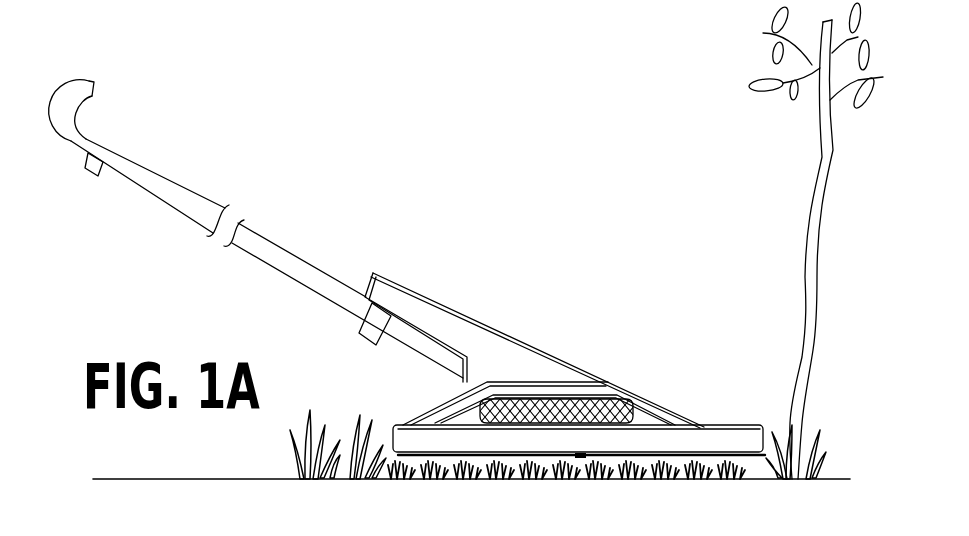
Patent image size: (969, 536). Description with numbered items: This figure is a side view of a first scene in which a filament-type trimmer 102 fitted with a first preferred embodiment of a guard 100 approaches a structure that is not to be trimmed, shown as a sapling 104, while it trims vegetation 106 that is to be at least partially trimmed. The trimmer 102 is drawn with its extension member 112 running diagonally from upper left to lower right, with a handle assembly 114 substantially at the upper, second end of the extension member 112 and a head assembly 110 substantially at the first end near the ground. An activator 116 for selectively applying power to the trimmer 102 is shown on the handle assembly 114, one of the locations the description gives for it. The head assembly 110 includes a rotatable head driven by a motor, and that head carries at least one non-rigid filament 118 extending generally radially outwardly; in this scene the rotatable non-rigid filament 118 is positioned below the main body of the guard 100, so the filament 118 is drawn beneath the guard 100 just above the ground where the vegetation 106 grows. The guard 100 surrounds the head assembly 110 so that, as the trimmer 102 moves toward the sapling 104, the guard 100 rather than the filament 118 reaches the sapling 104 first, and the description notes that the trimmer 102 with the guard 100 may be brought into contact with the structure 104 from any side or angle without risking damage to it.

The guard 100 is at (676, 388).
The filament-type trimmer 102 is at (297, 213).
The sapling 104 is at (850, 150).
The vegetation 106 is at (328, 418).
The head assembly 110 is at (628, 418).
The extension member 112 is at (268, 264).
The handle assembly 114 is at (94, 83).
The activator 116 is at (92, 177).
The non-rigid filament 118 is at (468, 470).